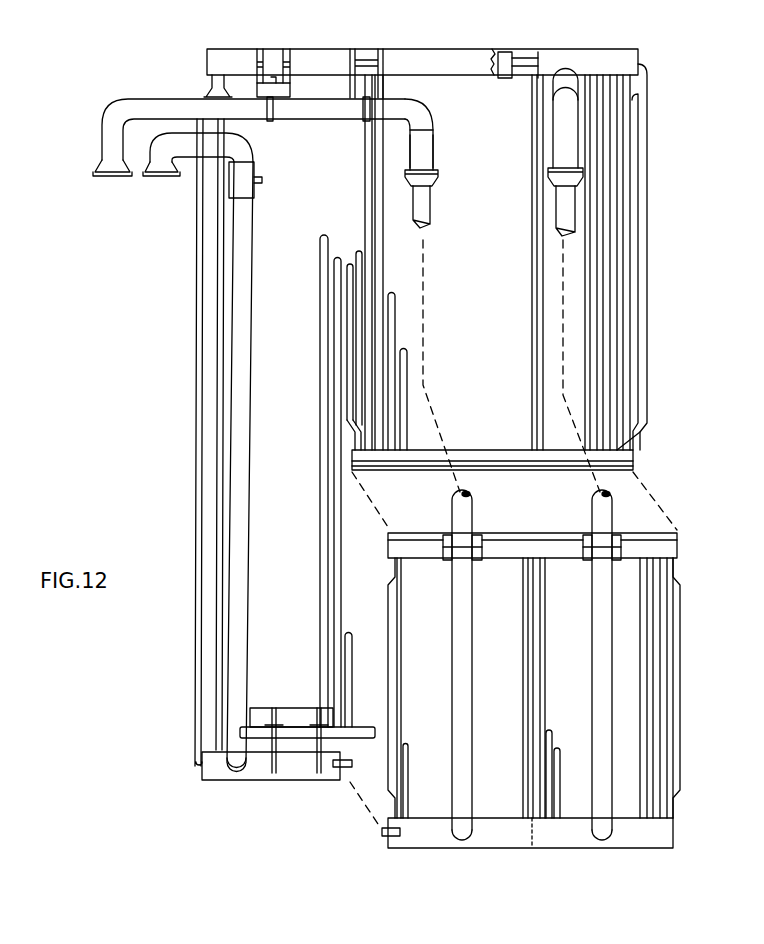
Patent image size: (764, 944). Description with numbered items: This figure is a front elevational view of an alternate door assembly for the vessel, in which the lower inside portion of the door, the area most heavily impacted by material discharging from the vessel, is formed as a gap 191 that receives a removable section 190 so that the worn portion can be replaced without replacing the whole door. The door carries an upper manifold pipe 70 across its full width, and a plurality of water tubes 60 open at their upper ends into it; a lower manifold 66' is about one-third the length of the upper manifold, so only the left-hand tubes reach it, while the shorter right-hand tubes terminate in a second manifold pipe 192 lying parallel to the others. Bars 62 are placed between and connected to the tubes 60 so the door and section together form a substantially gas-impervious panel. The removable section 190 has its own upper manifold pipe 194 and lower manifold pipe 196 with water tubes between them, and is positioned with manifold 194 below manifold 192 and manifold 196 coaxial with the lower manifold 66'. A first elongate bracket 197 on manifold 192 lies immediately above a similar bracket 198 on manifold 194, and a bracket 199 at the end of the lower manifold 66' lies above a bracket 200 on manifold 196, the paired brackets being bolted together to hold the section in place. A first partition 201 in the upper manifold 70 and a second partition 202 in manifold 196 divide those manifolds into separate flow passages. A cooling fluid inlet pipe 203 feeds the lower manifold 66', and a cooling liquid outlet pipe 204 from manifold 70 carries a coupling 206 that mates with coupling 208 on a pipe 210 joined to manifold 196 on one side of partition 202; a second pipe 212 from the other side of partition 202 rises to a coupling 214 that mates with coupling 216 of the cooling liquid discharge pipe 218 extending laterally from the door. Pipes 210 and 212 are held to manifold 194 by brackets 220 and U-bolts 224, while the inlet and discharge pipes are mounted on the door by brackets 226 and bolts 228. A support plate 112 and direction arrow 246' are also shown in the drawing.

The water tubes 60 is at (519, 441).
The bars 62 is at (617, 202).
The lower manifold 66' is at (271, 808).
The upper manifold pipe 70 is at (458, 48).
The support plate 112 is at (291, 717).
The removable section 190 is at (685, 510).
The gap 191 is at (424, 509).
The second manifold pipe 192 is at (635, 462).
The upper manifold pipe of the section 194 is at (576, 523).
The lower manifold pipe of the section 196 is at (677, 836).
The first elongate bracket 197 is at (617, 452).
The bracket 198 is at (537, 532).
The bracket 199 is at (352, 772).
The bracket 200 is at (382, 837).
The first partition 201 is at (490, 48).
The second partition 202 is at (537, 829).
The cooling fluid inlet pipe 203 is at (242, 322).
The cooling liquid outlet pipe 204 is at (567, 120).
The coupling 206 is at (553, 170).
The mating coupling 208 is at (561, 190).
The pipe 210 is at (600, 658).
The second pipe 212 is at (457, 720).
The coupling 214 is at (440, 188).
The mating coupling 216 is at (420, 165).
The cooling liquid discharge pipe 218 is at (157, 102).
The brackets 220 is at (613, 542).
The U-bolts 224 is at (473, 560).
The brackets 226 is at (291, 84).
The bolts 228 is at (360, 112).
The flow direction 246' is at (163, 475).